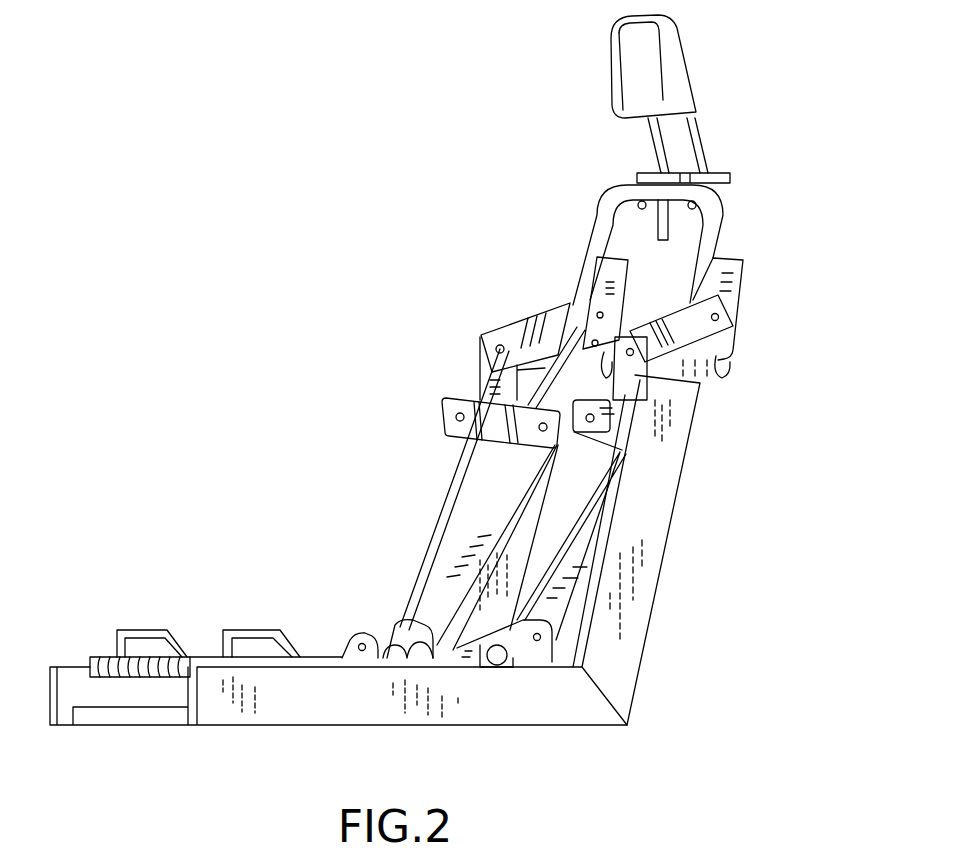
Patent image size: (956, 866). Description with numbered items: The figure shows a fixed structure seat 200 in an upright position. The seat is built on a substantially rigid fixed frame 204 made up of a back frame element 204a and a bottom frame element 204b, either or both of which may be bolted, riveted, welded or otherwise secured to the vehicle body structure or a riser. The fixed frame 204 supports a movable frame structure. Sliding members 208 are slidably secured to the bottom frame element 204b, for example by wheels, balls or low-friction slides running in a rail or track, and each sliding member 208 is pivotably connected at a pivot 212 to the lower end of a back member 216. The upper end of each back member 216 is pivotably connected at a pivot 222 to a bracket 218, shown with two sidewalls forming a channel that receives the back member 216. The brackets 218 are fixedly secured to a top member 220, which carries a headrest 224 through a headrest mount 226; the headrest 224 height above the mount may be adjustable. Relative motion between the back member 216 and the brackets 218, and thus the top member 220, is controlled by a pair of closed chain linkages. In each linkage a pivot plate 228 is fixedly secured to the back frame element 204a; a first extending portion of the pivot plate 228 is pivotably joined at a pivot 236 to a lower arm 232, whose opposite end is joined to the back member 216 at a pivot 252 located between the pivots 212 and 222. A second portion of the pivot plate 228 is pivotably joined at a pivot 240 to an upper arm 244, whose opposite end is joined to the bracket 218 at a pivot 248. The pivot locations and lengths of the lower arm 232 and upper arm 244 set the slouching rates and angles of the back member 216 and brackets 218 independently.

The fixed structure seat 200 is at (382, 204).
The fixed frame 204 is at (390, 568).
The back frame element 204a is at (518, 527).
The bottom frame element 204b is at (73, 675).
The sliding members 208 is at (360, 642).
The pivot 212 is at (407, 630).
The back members 216 is at (478, 524).
The bracket 218 is at (600, 244).
The top member 220 is at (722, 212).
The pivot 222 is at (600, 340).
The headrest 224 is at (676, 100).
The headrest mount 226 is at (728, 180).
The pivot plate 228 is at (486, 380).
The lower arm 232 is at (488, 427).
The pivot 236 is at (456, 417).
The pivot 240 is at (642, 330).
The upper arm 244 is at (546, 320).
The pivot 248 is at (602, 313).
The pivot 252 is at (488, 467).